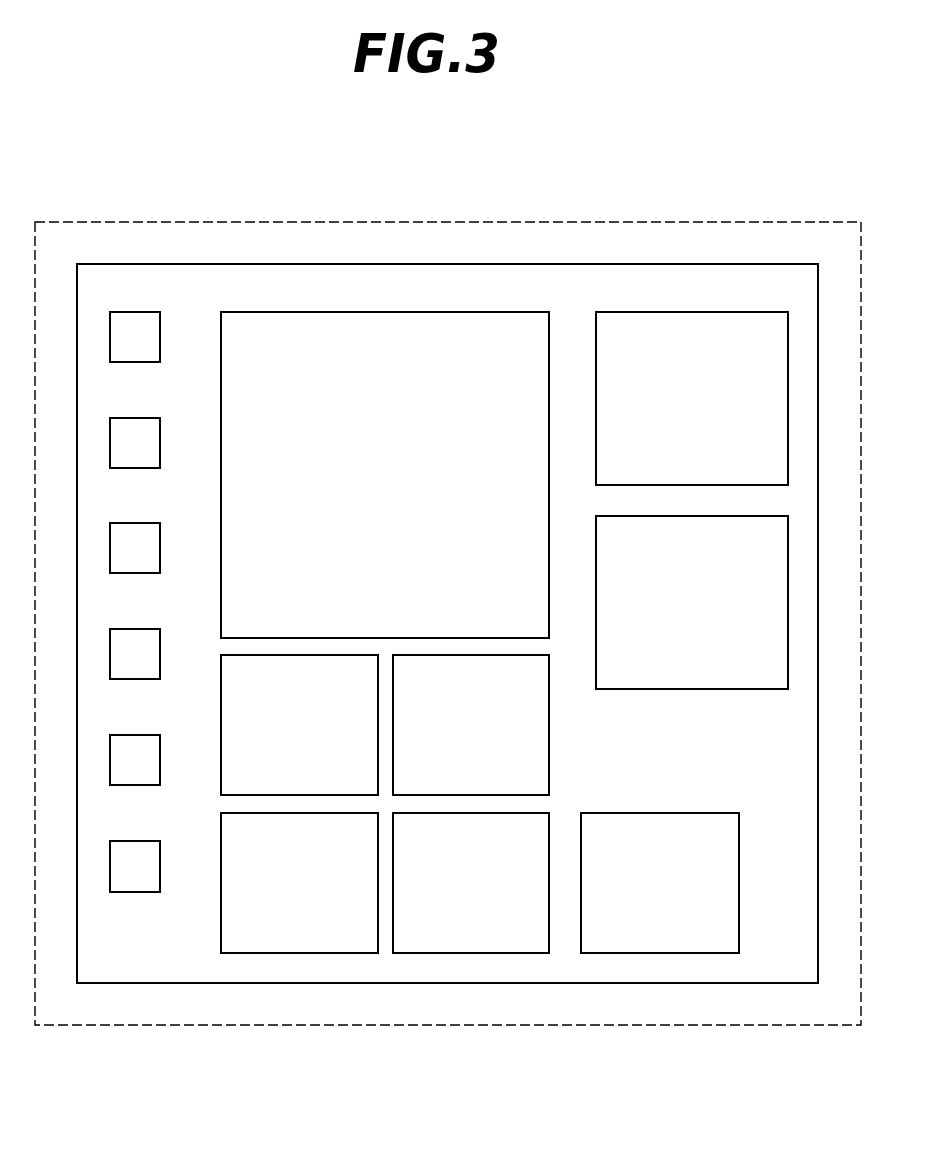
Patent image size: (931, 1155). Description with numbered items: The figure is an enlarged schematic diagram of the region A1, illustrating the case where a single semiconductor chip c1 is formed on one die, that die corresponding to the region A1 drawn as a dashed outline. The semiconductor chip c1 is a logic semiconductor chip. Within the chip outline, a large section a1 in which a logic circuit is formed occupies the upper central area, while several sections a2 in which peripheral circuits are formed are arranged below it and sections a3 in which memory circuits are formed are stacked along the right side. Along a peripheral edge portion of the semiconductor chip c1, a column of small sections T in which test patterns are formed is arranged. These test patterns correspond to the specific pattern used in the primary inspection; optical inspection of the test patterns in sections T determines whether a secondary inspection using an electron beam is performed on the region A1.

The sections in which test patterns are formed T is at (133, 312).
The section in which a logic circuit is formed a1 is at (383, 312).
The sections in which peripheral circuits are formed a2 is at (300, 953).
The sections in which memory circuits are formed a3 is at (665, 312).
The semiconductor chip c1 is at (740, 264).
The region A1 is at (812, 222).